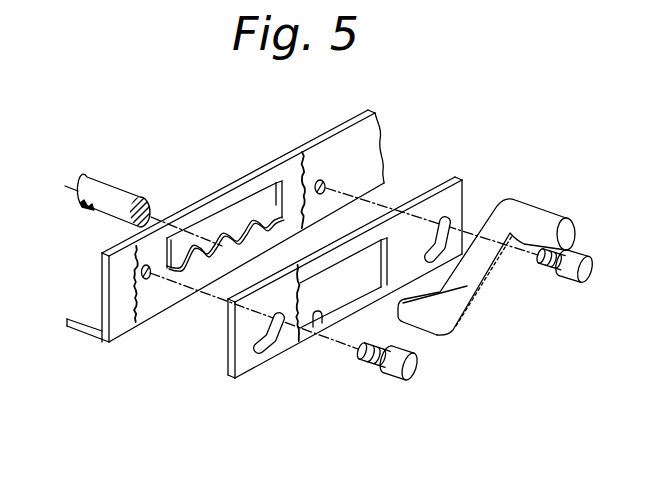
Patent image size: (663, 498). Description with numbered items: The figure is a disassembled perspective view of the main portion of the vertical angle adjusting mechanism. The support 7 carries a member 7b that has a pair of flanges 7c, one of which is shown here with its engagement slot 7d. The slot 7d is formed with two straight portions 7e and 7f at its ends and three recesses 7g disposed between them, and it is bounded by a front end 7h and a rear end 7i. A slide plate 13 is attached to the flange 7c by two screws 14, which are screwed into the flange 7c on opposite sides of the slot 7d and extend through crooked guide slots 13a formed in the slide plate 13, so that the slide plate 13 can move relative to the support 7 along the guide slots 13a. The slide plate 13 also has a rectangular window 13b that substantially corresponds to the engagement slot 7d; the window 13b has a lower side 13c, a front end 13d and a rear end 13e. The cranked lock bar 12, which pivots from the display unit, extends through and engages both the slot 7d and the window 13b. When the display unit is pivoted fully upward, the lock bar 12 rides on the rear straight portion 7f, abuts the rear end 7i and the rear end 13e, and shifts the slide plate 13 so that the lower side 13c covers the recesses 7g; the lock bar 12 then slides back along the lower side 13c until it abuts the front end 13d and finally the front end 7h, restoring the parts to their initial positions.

The support 7 is at (77, 330).
The member of the support 7b is at (88, 330).
The flange 7c is at (101, 273).
The engagement slot 7d is at (248, 200).
The straight portion 7e is at (171, 279).
The rear straight portion 7f is at (236, 272).
The recesses 7g is at (222, 245).
The front end of the slot 7h is at (177, 248).
The rear end of the slot 7i is at (275, 182).
The lock bar 12 is at (474, 290).
The slide plate 13 is at (238, 382).
The guide slots 13a is at (264, 353).
The rectangular window 13b is at (346, 302).
The lower side of the window 13c is at (312, 329).
The front end of the window 13d is at (314, 283).
The rear end of the window 13e is at (391, 244).
The screws 14 is at (407, 379).